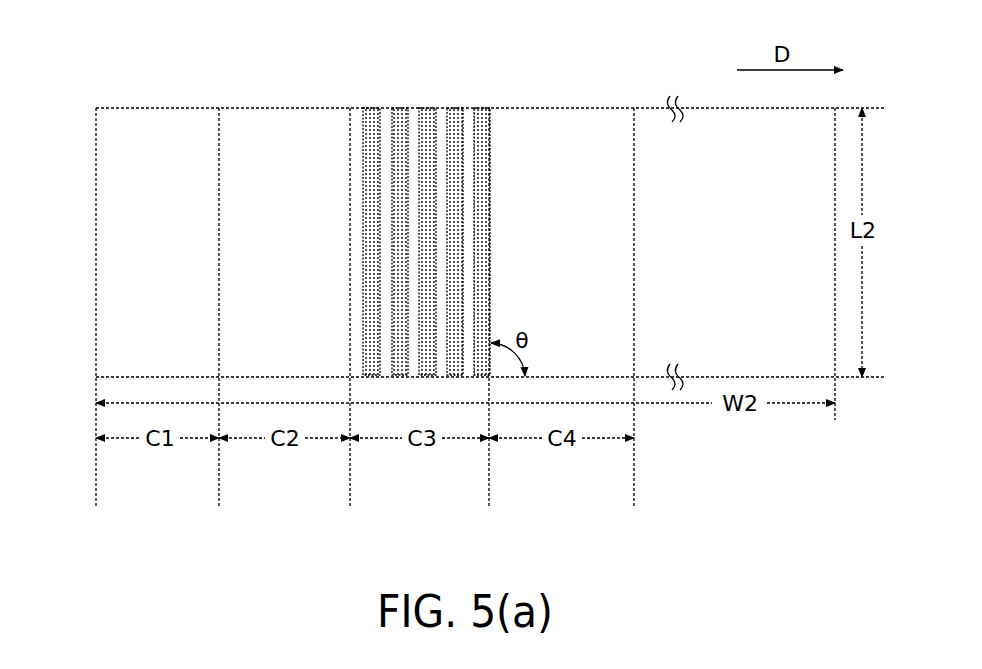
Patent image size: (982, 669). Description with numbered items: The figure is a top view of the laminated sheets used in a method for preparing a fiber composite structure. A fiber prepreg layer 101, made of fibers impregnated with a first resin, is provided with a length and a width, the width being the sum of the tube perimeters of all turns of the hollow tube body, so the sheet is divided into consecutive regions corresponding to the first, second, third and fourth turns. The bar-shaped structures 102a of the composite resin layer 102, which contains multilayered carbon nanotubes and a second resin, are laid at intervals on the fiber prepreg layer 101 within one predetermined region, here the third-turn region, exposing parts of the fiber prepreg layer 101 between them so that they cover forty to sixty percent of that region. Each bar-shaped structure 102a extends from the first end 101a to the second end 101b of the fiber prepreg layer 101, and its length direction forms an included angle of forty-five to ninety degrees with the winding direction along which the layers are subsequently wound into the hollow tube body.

The fiber prepreg layer 101 is at (147, 118).
The first end 101a is at (114, 108).
The second end 101b is at (113, 377).
The composite resin layer 102 is at (448, 217).
The bar-shaped structure 102a is at (427, 110).